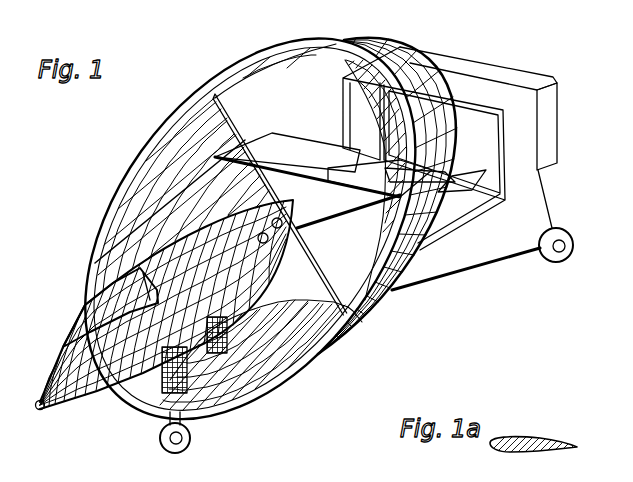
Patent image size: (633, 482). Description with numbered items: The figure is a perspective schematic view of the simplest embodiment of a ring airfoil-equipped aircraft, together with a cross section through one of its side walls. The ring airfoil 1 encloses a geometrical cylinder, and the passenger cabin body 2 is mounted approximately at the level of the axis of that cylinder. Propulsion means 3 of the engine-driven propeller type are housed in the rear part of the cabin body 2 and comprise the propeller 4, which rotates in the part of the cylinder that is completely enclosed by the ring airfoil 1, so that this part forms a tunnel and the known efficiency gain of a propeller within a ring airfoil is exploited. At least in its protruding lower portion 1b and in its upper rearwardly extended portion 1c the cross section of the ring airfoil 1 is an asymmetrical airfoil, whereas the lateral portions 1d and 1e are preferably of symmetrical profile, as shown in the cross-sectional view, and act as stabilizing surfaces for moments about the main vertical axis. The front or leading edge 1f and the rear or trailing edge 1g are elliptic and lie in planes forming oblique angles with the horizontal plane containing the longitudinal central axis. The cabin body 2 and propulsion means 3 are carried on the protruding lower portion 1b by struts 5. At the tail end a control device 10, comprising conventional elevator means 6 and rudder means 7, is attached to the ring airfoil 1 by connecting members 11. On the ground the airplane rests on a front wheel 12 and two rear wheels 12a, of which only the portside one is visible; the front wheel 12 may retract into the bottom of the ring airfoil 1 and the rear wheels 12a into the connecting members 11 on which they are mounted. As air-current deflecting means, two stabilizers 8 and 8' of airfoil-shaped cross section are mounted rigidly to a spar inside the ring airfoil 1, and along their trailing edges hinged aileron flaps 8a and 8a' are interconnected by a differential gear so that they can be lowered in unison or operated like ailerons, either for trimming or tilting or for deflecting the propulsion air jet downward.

In FIG. 1, the ring airfoil 1 is at (250, 240).
In FIG. 1, the protruding lower portion 1b is at (230, 383).
In FIG. 1, the upper rearwardly extended portion 1c is at (375, 55).
In FIG. 1, the lateral portion 1d is at (413, 260).
In FIG. 1A, the lateral portion 1d is at (539, 426).
In FIG. 1, the lateral portion 1e is at (175, 155).
In FIG. 1A, the lateral portion 1e is at (527, 440).
In FIG. 1, the leading edge 1f is at (125, 183).
In FIG. 1, the trailing edge 1g is at (257, 83).
In FIG. 1, the passenger cabin body 2 is at (60, 370).
In FIG. 1, the propulsion means 3 is at (156, 290).
In FIG. 1, the propeller 4 is at (327, 277).
In FIG. 1, the struts 5 is at (240, 300).
In FIG. 1, the elevator means 6 is at (520, 77).
In FIG. 1, the rudder means 7 is at (548, 130).
In FIG. 1, the stabilizer 8 is at (307, 153).
In FIG. 1, the aileron flap 8a is at (375, 154).
In FIG. 1, the stabilizer 8' is at (420, 157).
In FIG. 1, the aileron flap 8a' is at (465, 167).
In FIG. 1, the control device 10 is at (477, 60).
In FIG. 1, the connecting members 11 is at (313, 213).
In FIG. 1, the front wheel 12 is at (184, 448).
In FIG. 1, the rear wheels 12a is at (559, 263).